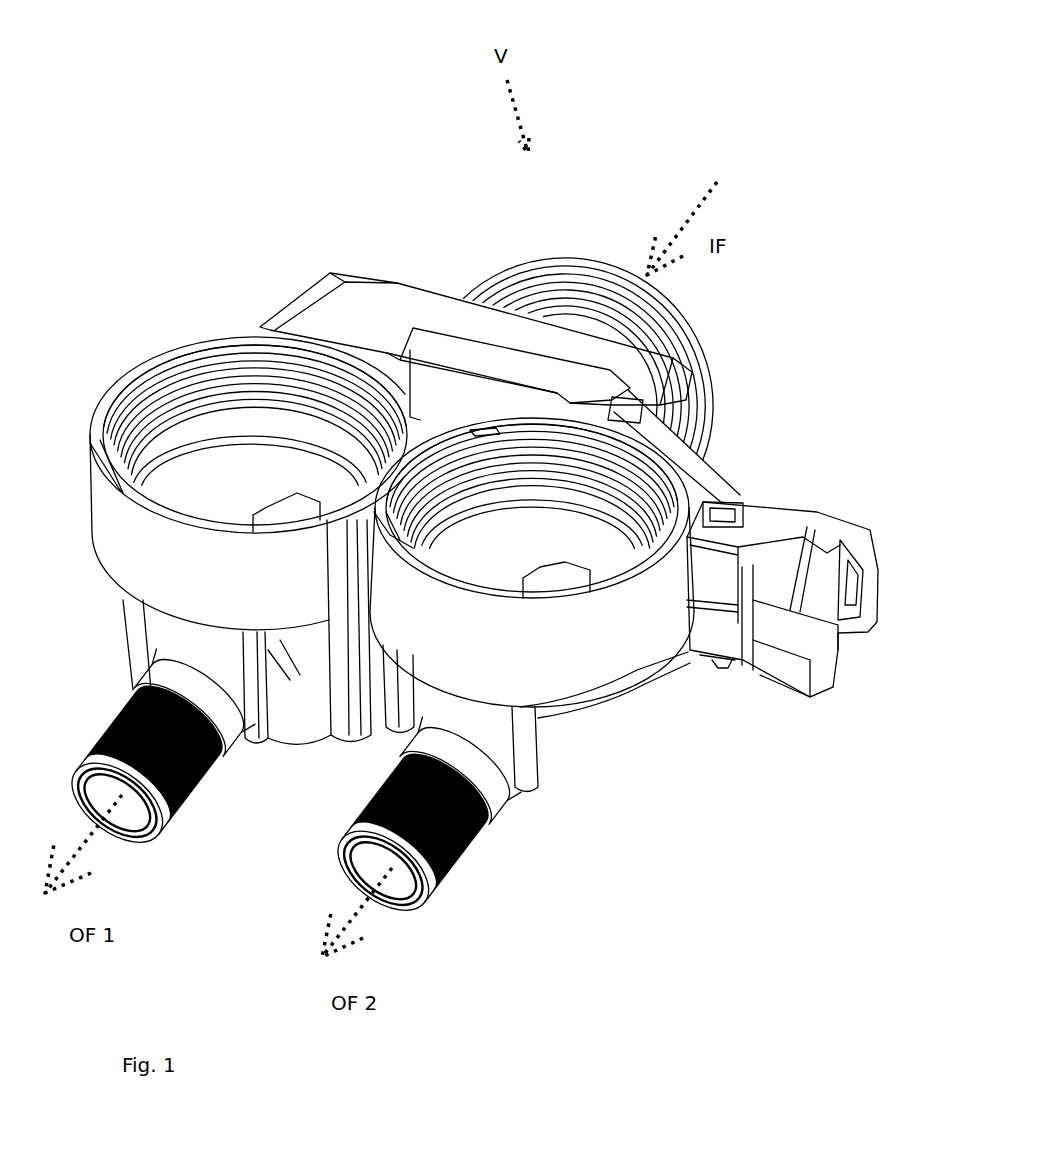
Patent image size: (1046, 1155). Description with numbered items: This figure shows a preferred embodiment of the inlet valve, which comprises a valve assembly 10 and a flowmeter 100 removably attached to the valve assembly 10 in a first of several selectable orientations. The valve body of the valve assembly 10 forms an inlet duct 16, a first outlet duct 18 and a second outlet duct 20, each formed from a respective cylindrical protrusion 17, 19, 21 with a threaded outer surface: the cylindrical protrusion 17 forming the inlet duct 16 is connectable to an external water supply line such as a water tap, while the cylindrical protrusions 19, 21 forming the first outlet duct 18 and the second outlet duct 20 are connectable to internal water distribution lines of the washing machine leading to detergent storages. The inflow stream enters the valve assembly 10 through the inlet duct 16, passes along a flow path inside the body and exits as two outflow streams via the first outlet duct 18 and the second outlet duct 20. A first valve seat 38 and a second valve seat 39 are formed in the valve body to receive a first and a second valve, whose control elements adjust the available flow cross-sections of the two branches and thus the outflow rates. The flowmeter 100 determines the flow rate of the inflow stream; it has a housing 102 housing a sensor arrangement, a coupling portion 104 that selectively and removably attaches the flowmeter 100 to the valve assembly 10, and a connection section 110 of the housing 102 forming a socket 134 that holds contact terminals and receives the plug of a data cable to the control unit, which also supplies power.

The valve assembly 10 is at (621, 779).
The inlet duct 16 is at (490, 245).
The cylindrical protrusion 17 is at (575, 300).
The first outlet duct 18 is at (138, 877).
The cylindrical protrusion 19 is at (208, 772).
The second outlet duct 20 is at (449, 934).
The cylindrical protrusion 21 is at (480, 840).
The first valve seat 38 is at (214, 468).
The second valve seat 39 is at (517, 564).
The flowmeter 100 is at (781, 355).
The housing 102 is at (752, 475).
The coupling portion 104 is at (399, 299).
The connection section 110 is at (781, 716).
The socket 134 is at (877, 646).